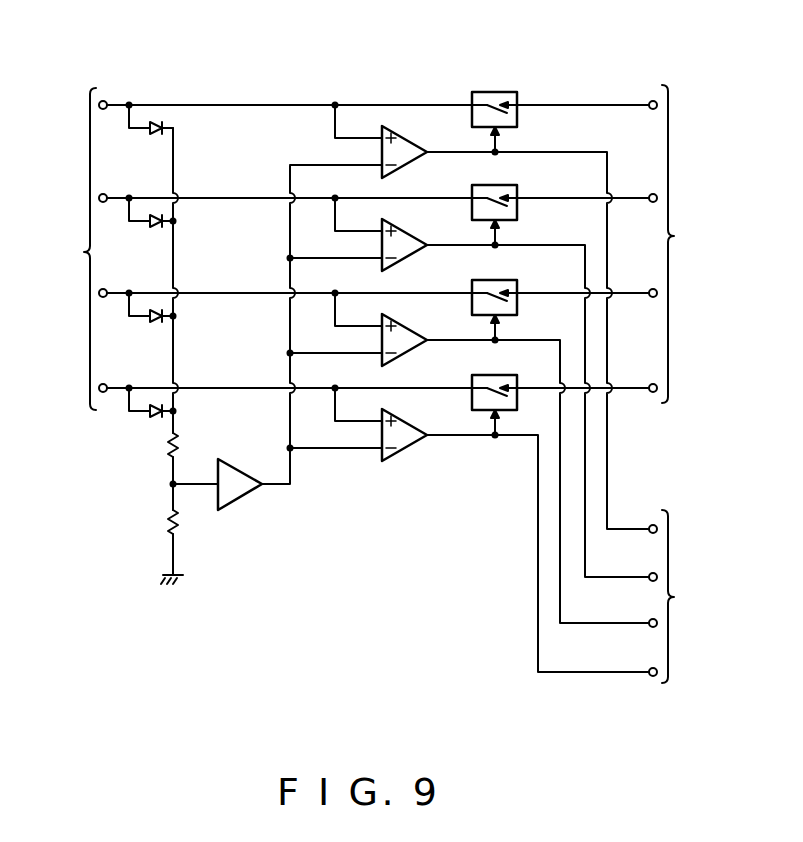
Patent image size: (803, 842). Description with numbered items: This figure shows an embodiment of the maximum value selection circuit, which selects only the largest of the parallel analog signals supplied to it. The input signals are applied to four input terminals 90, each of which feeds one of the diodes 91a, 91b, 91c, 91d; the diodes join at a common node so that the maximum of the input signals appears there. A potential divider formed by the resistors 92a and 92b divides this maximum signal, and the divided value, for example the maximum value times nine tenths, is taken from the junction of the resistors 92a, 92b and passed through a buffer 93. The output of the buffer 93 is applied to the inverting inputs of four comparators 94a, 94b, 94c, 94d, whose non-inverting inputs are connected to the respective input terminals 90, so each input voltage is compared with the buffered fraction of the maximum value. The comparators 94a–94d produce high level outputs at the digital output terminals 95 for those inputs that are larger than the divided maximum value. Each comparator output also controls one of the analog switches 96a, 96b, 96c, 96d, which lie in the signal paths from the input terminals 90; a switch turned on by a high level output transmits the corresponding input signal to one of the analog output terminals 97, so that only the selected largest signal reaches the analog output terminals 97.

The input terminals 90 is at (73, 249).
The diode 91a is at (150, 134).
The diode 91b is at (150, 227).
The diode 91c is at (150, 322).
The diode 91d is at (148, 417).
The resistor 92a is at (165, 450).
The resistor 92b is at (166, 525).
The buffer 93 is at (246, 501).
The comparator 94a is at (403, 133).
The comparator 94b is at (396, 228).
The comparator 94c is at (400, 323).
The comparator 94d is at (403, 456).
The digital output terminals 95 is at (681, 596).
The analog switch 96a is at (497, 91).
The analog switch 96b is at (517, 215).
The analog switch 96c is at (517, 308).
The analog switch 96d is at (512, 413).
The analog output terminals 97 is at (680, 244).